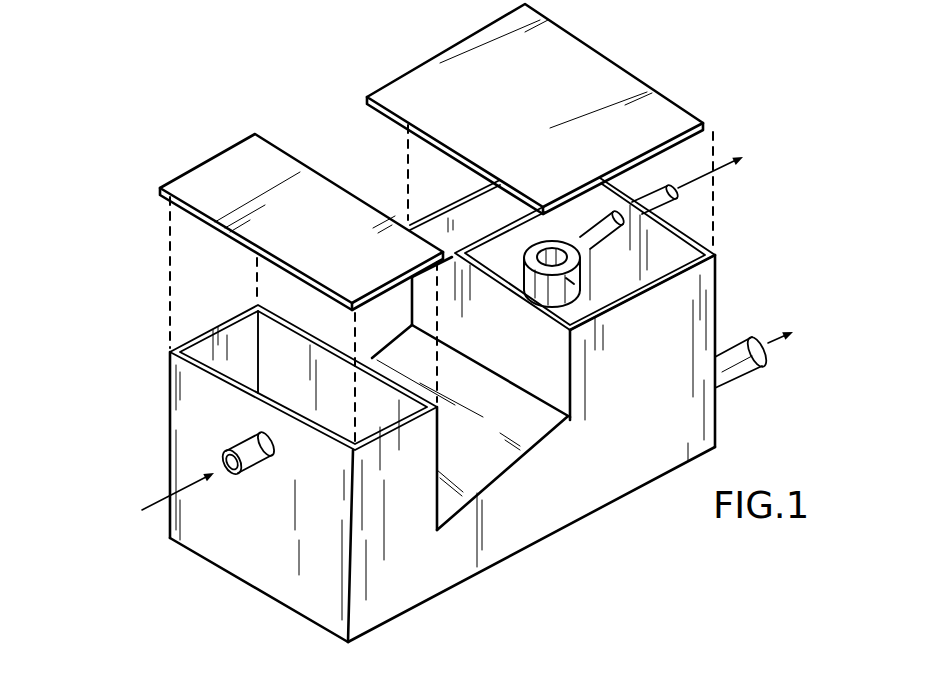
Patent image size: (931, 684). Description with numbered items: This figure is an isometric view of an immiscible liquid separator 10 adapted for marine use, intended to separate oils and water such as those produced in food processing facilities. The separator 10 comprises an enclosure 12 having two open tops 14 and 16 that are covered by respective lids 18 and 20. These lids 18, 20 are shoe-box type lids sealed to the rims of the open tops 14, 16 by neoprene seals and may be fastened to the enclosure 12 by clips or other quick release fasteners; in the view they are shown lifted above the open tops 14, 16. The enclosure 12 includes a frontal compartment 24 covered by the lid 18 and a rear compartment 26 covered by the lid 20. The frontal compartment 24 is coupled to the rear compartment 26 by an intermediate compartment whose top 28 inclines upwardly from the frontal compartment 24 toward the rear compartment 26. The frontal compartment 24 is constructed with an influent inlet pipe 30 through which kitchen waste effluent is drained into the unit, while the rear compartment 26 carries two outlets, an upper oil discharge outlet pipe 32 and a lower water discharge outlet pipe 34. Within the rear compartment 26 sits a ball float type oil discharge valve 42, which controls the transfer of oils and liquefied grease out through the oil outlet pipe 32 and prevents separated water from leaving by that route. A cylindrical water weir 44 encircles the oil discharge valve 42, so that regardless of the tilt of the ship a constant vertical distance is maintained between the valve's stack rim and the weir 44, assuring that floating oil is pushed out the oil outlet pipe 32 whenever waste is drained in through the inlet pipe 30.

The immiscible liquid separator 10 is at (85, 421).
The enclosure 12 is at (186, 469).
The open top 14 is at (238, 316).
The open top 16 is at (598, 332).
The lid 18 is at (208, 157).
The lid 20 is at (625, 80).
The frontal compartment 24 is at (422, 485).
The rear compartment 26 is at (698, 330).
The top of intermediate compartment 28 is at (538, 437).
The influent inlet pipe 30 is at (257, 457).
The oil discharge outlet pipe 32 is at (650, 192).
The water discharge outlet pipe 34 is at (732, 385).
The oil discharge valve 42 is at (543, 258).
The cylindrical water weir 44 is at (573, 282).